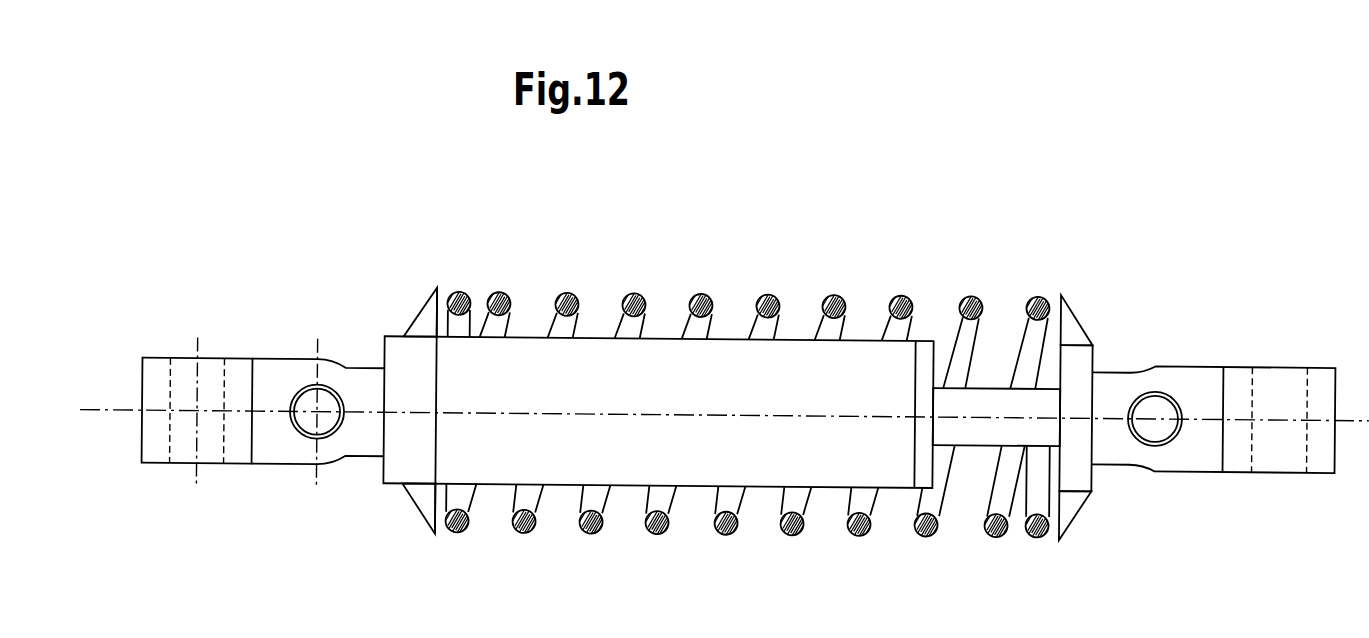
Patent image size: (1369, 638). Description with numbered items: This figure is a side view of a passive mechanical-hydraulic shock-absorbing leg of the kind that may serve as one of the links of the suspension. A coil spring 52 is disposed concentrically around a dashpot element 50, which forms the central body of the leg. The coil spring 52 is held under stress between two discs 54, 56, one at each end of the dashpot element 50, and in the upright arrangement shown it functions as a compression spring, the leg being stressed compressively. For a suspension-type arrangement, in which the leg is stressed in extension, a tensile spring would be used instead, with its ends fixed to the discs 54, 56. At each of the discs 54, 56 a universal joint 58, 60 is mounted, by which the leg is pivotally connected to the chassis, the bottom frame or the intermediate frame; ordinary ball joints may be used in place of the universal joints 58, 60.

The dashpot element 50 is at (727, 368).
The coil spring 52 is at (962, 337).
The disc 54 is at (428, 323).
The disc 56 is at (1077, 332).
The universal joint 58 is at (273, 368).
The universal joint 60 is at (1200, 385).